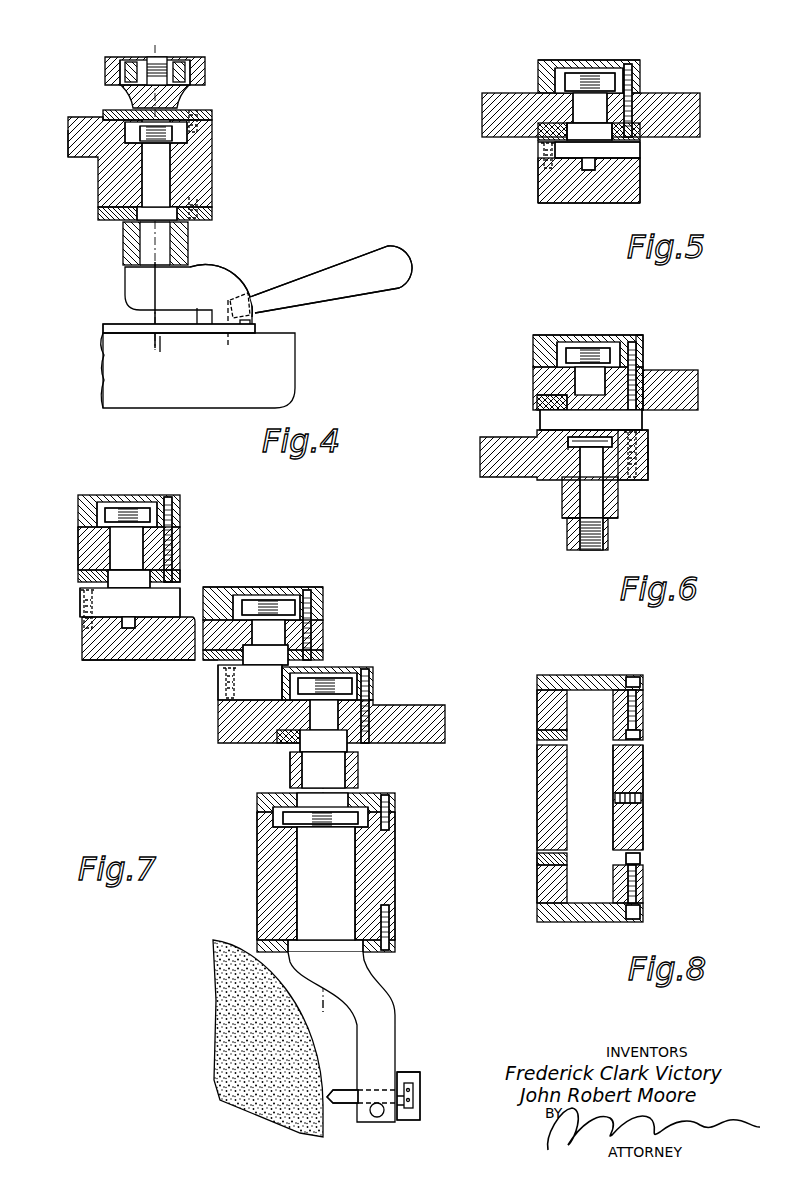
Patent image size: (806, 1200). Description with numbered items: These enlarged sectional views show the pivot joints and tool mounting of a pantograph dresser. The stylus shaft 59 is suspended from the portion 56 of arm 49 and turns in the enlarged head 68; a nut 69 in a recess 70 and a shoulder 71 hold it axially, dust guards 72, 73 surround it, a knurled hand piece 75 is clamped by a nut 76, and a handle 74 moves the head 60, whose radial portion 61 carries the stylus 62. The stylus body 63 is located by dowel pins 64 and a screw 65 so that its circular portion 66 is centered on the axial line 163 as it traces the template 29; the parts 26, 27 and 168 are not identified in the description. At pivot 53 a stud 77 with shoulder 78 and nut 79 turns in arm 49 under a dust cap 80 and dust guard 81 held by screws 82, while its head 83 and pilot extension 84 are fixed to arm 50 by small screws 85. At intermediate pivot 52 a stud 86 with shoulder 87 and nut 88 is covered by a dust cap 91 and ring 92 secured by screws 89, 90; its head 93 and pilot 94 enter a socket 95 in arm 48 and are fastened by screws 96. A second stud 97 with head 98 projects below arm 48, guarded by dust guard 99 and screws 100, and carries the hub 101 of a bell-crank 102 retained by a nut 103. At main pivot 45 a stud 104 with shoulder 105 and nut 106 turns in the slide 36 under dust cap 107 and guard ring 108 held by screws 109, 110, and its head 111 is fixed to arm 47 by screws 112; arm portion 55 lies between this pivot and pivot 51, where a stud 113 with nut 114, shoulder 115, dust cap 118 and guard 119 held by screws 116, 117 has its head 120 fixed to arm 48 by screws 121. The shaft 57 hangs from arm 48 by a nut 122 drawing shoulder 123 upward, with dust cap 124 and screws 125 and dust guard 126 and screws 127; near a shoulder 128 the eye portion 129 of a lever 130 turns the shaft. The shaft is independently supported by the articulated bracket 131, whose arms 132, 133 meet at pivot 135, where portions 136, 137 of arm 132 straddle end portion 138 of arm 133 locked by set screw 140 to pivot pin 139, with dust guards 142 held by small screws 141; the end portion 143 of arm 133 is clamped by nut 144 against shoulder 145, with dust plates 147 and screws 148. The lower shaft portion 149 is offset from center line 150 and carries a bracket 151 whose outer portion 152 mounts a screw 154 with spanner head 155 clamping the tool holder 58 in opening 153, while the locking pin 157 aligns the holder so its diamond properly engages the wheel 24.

In FIG. 7, the wheel 24 is at (220, 1018).
In FIG. 4, the work table 26 is at (92, 373).
In FIG. 4, the table base 27 is at (295, 360).
In FIG. 4, the template 29 is at (142, 336).
In FIG. 7, the slide 36 is at (80, 536).
In FIG. 7, the main pivot 45 is at (70, 556).
In FIG. 7, the pantograph arm 47 is at (72, 652).
In FIG. 6, the pantograph arm 48 is at (470, 470).
In FIG. 7, the pantograph arm 48 is at (424, 706).
In FIG. 5, the pantograph arm 49 is at (494, 90).
In FIG. 6, the pantograph arm 49 is at (708, 396).
In FIG. 5, the pantograph arm 50 is at (534, 204).
In FIG. 7, the pivot 51 is at (270, 576).
In FIG. 6, the intermediate pivot 52 is at (641, 318).
In FIG. 5, the pivot 53 is at (622, 48).
In FIG. 7, the arm portion 55 is at (95, 664).
In FIG. 4, the arm portion 56 is at (70, 166).
In FIG. 7, the vertical shaft 57 is at (295, 895).
In FIG. 7, the tool holder 58 is at (348, 1105).
In FIG. 4, the shaft 59 is at (165, 176).
In FIG. 4, the head-like portion 60 is at (167, 321).
In FIG. 4, the radial portion 61 is at (225, 285).
In FIG. 4, the stylus 62 is at (166, 340).
In FIG. 4, the stylus body 63 is at (206, 336).
In FIG. 4, the locating dowel pins 64 is at (228, 350).
In FIG. 4, the securing screw 65 is at (243, 338).
In FIG. 4, the circular portion 66 is at (160, 332).
In FIG. 4, the head-like portion 68 is at (208, 153).
In FIG. 4, the nut 69 is at (140, 132).
In FIG. 4, the recess 70 is at (126, 130).
In FIG. 4, the shoulder 71 is at (163, 212).
In FIG. 4, the dust guard 72 is at (108, 112).
In FIG. 4, the dust guard 73 is at (112, 222).
In FIG. 4, the handle 74 is at (337, 265).
In FIG. 4, the knurled hand piece 75 is at (207, 73).
In FIG. 4, the nut 76 is at (160, 58).
In FIG. 5, the stud 77 is at (590, 108).
In FIG. 5, the shoulder 78 is at (589, 131).
In FIG. 5, the nut 79 is at (568, 72).
In FIG. 5, the dust cap 80 is at (545, 62).
In FIG. 5, the dust guard 81 is at (545, 135).
In FIG. 5, the screws 82 is at (636, 78).
In FIG. 5, the head 83 is at (636, 156).
In FIG. 5, the pilot-like extension 84 is at (600, 176).
In FIG. 5, the small screws 85 is at (545, 170).
In FIG. 6, the stud 86 is at (590, 381).
In FIG. 6, the shoulder 87 is at (555, 389).
In FIG. 6, the nut 88 is at (570, 348).
In FIG. 6, the small screw 89 is at (643, 356).
In FIG. 6, the small screw 90 is at (636, 385).
In FIG. 6, the dust cap 91 is at (545, 336).
In FIG. 6, the dust guard ring 92 is at (537, 406).
In FIG. 6, the head 93 is at (540, 423).
In FIG. 6, the centering pilot 94 is at (582, 437).
In FIG. 6, the socket 95 is at (568, 450).
In FIG. 6, the small screws 96 is at (640, 430).
In FIG. 6, the stud 97 is at (618, 509).
In FIG. 6, the head 98 is at (580, 470).
In FIG. 6, the dust guard 99 is at (578, 455).
In FIG. 6, the small screws 100 is at (640, 468).
In FIG. 6, the hub 101 is at (615, 516).
In FIG. 6, the bell-crank 102 is at (630, 490).
In FIG. 6, the nut 103 is at (570, 545).
In FIG. 7, the stud 104 is at (127, 548).
In FIG. 7, the shoulder 105 is at (129, 579).
In FIG. 7, the nut 106 is at (110, 506).
In FIG. 7, the dust cap 107 is at (84, 494).
In FIG. 7, the dust guard ring 108 is at (78, 578).
In FIG. 7, the screws 109 is at (170, 496).
In FIG. 7, the screws 110 is at (181, 575).
In FIG. 7, the head 111 is at (130, 602).
In FIG. 7, the screws 112 is at (82, 609).
In FIG. 7, the stud 113 is at (263, 635).
In FIG. 7, the nut 114 is at (290, 600).
In FIG. 7, the shoulder 115 is at (265, 655).
In FIG. 7, the screws 116 is at (312, 603).
In FIG. 7, the screws 117 is at (320, 655).
In FIG. 7, the dust cap 118 is at (226, 588).
In FIG. 7, the dust guard 119 is at (216, 661).
In FIG. 7, the head 120 is at (250, 682).
In FIG. 7, the screws 121 is at (222, 692).
In FIG. 7, the nut 122 is at (350, 680).
In FIG. 7, the shoulder 123 is at (306, 735).
In FIG. 7, the dust cap 124 is at (360, 678).
In FIG. 7, the screws 125 is at (372, 686).
In FIG. 7, the dust guard 126 is at (280, 738).
In FIG. 7, the screws 127 is at (348, 748).
In FIG. 7, the shoulder 128 is at (345, 784).
In FIG. 7, the collar 129 is at (358, 769).
In FIG. 7, the lever 130 is at (280, 791).
In FIG. 7, the articulated bracket 131 is at (408, 860).
In FIG. 8, the articulated bracket 131 is at (528, 820).
In FIG. 8, the bracket arm 132 is at (655, 704).
In FIG. 8, the bracket arm 133 is at (660, 823).
In FIG. 8, the pivot 135 is at (660, 752).
In FIG. 8, the arm portion 136 is at (540, 725).
In FIG. 8, the arm portion 137 is at (540, 885).
In FIG. 8, the end portion 138 is at (542, 776).
In FIG. 8, the pivot pin 139 is at (605, 779).
In FIG. 8, the set screw 140 is at (642, 797).
In FIG. 8, the small screws 141 is at (636, 676).
In FIG. 8, the dust guards 142 is at (570, 676).
In FIG. 7, the end portion 143 is at (390, 896).
In FIG. 7, the nut 144 is at (282, 818).
In FIG. 7, the shoulder 145 is at (304, 940).
In FIG. 7, the dust plates 147 is at (258, 804).
In FIG. 7, the small screws 148 is at (392, 801).
In FIG. 7, the lower shaft portion 149 is at (388, 1018).
In FIG. 7, the center line 150 is at (324, 996).
In FIG. 7, the bracket 151 is at (416, 1064).
In FIG. 7, the outer portion 152 is at (418, 1082).
In FIG. 7, the opening 153 is at (370, 1088).
In FIG. 7, the screw 154 is at (414, 1098).
In FIG. 7, the screw head 155 is at (410, 1112).
In FIG. 7, the aligning and locking pin 157 is at (378, 1118).
In FIG. 4, the axial line 163 is at (128, 276).
In FIG. 4, the bushing 168 is at (157, 253).